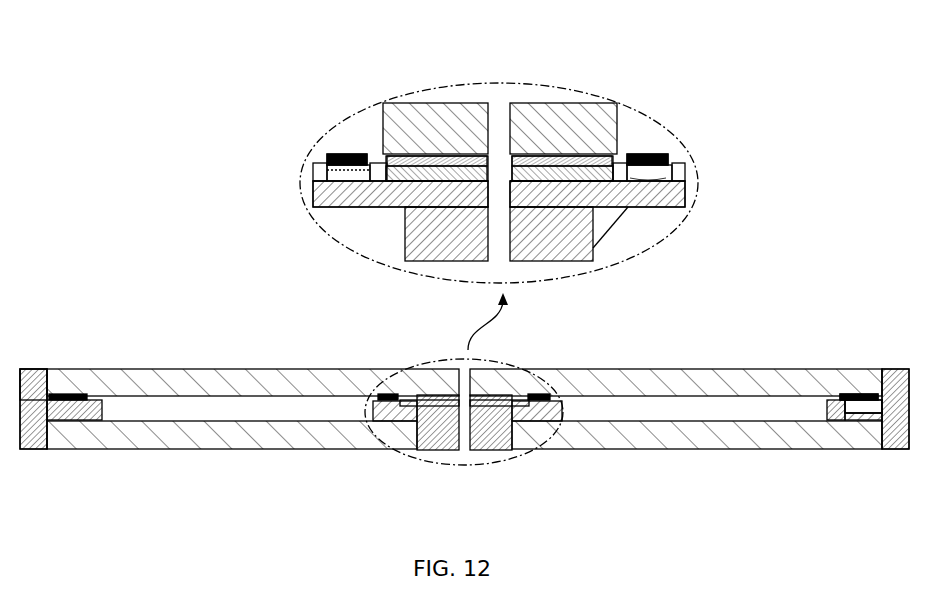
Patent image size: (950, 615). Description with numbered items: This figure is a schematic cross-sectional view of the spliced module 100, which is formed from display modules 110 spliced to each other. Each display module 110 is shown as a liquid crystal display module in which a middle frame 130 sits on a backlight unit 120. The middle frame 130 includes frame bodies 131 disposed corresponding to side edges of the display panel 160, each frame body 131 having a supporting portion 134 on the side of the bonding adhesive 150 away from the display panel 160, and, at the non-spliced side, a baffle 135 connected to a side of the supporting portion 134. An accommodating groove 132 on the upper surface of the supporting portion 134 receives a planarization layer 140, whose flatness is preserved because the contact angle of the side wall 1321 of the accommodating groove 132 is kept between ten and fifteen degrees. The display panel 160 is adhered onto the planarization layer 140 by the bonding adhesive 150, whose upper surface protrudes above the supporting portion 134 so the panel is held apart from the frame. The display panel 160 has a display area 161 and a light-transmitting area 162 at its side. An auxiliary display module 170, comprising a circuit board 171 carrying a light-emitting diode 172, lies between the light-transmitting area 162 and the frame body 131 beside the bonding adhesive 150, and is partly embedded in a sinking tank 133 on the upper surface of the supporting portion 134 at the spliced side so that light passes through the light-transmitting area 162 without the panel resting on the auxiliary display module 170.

The spliced module 100 is at (84, 300).
The display module 110 is at (164, 459).
The backlight unit 120 is at (293, 438).
The middle frame 130 is at (32, 444).
The frame body 131 is at (460, 347).
The accommodating groove 132 is at (868, 418).
The side wall 1321 is at (325, 170).
The sinking tank 133 is at (408, 195).
The supporting portion 134 is at (98, 410).
The baffle 135 is at (33, 387).
The planarization layer 140 is at (845, 404).
The bonding adhesive 150 is at (855, 394).
The display panel 160 is at (218, 385).
The display area 161 is at (370, 410).
The light-transmitting area 162 is at (458, 410).
The auxiliary display module 170 is at (435, 37).
The circuit board 171 is at (473, 170).
The light-emitting diode 172 is at (442, 160).